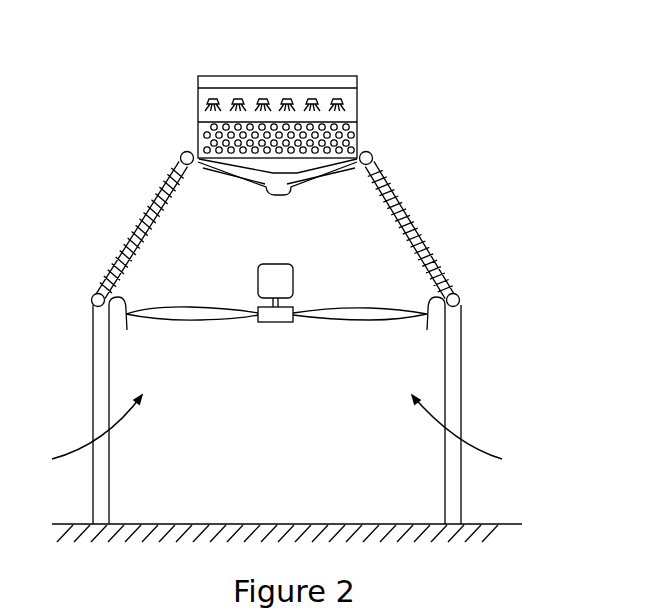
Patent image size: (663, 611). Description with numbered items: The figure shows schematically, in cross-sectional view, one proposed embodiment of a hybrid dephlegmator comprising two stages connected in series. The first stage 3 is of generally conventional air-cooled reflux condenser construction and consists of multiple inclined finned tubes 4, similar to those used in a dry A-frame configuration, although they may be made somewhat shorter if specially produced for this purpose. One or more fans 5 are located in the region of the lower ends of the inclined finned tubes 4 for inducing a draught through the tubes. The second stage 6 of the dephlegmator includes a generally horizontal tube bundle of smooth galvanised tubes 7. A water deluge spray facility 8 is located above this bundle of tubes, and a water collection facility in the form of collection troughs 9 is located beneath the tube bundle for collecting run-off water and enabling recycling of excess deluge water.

The first stage 3 is at (322, 338).
The inclined finned tubes 4 is at (400, 216).
The fans 5 is at (397, 322).
The second stage 6 is at (368, 123).
The smooth galvanised tubes 7 is at (337, 138).
The water deluge spray facility 8 is at (337, 103).
The collection troughs 9 is at (332, 173).